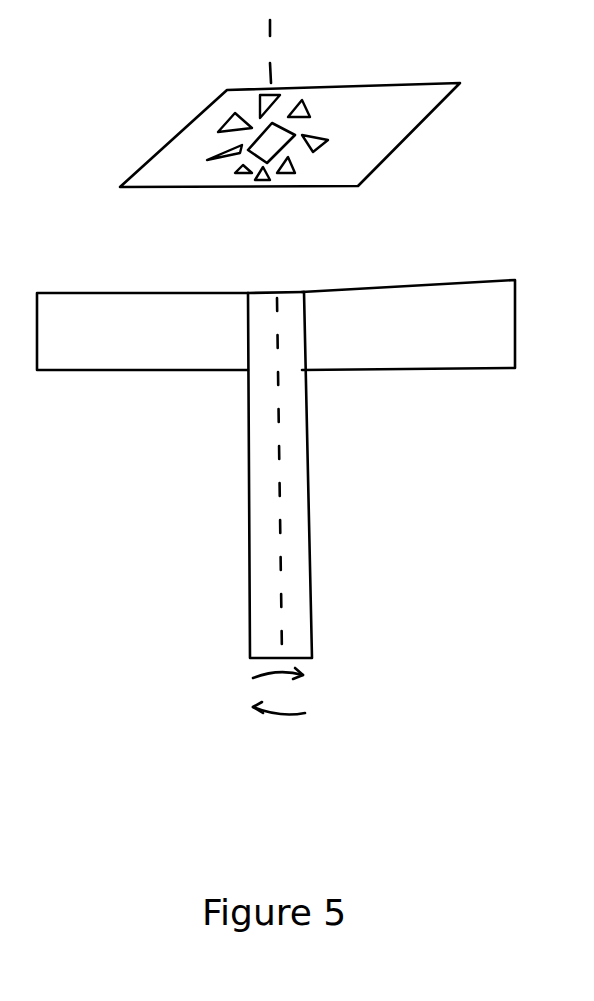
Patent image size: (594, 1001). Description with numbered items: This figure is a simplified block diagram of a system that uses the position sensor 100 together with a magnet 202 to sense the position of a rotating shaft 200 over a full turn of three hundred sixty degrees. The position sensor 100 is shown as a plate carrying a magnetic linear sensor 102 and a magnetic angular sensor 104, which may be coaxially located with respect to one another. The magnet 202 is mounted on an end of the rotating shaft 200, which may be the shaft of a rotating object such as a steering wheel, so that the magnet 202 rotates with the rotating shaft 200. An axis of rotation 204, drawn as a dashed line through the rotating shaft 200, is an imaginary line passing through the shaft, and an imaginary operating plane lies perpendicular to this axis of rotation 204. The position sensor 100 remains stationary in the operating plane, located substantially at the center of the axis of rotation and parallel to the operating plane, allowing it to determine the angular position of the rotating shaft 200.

The position sensor 100 is at (447, 157).
The magnetic linear sensor 102 is at (271, 143).
The magnetic angular sensor 104 is at (322, 157).
The rotating shaft 200 is at (312, 535).
The magnet 202 is at (515, 323).
The axis of rotation 204 is at (278, 488).